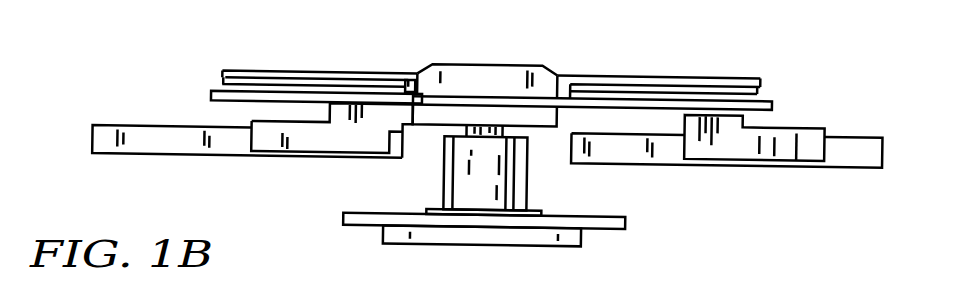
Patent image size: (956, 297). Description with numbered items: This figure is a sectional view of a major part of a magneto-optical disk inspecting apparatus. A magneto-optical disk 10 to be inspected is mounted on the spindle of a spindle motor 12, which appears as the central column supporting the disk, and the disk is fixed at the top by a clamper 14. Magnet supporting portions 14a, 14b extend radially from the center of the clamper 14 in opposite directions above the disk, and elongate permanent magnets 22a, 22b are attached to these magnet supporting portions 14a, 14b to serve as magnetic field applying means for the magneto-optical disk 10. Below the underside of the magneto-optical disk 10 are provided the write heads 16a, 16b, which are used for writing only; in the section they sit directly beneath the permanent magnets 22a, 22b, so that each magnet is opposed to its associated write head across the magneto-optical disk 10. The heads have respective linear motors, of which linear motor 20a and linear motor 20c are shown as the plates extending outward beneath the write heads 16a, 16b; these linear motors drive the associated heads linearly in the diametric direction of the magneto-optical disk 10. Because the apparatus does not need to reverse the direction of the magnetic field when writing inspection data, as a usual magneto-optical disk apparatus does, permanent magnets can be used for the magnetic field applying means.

The magneto-optical disk 10 is at (211, 99).
The spindle motor 12 is at (558, 196).
The clamper 14 is at (482, 64).
The magnet supporting portion 14a is at (692, 73).
The magnet supporting portion 14b is at (292, 72).
The write head 16a is at (816, 123).
The write head 16b is at (252, 140).
The linear motor 20a is at (825, 158).
The linear motor 20c is at (132, 160).
The permanent magnet 22a is at (760, 87).
The permanent magnet 22b is at (222, 81).